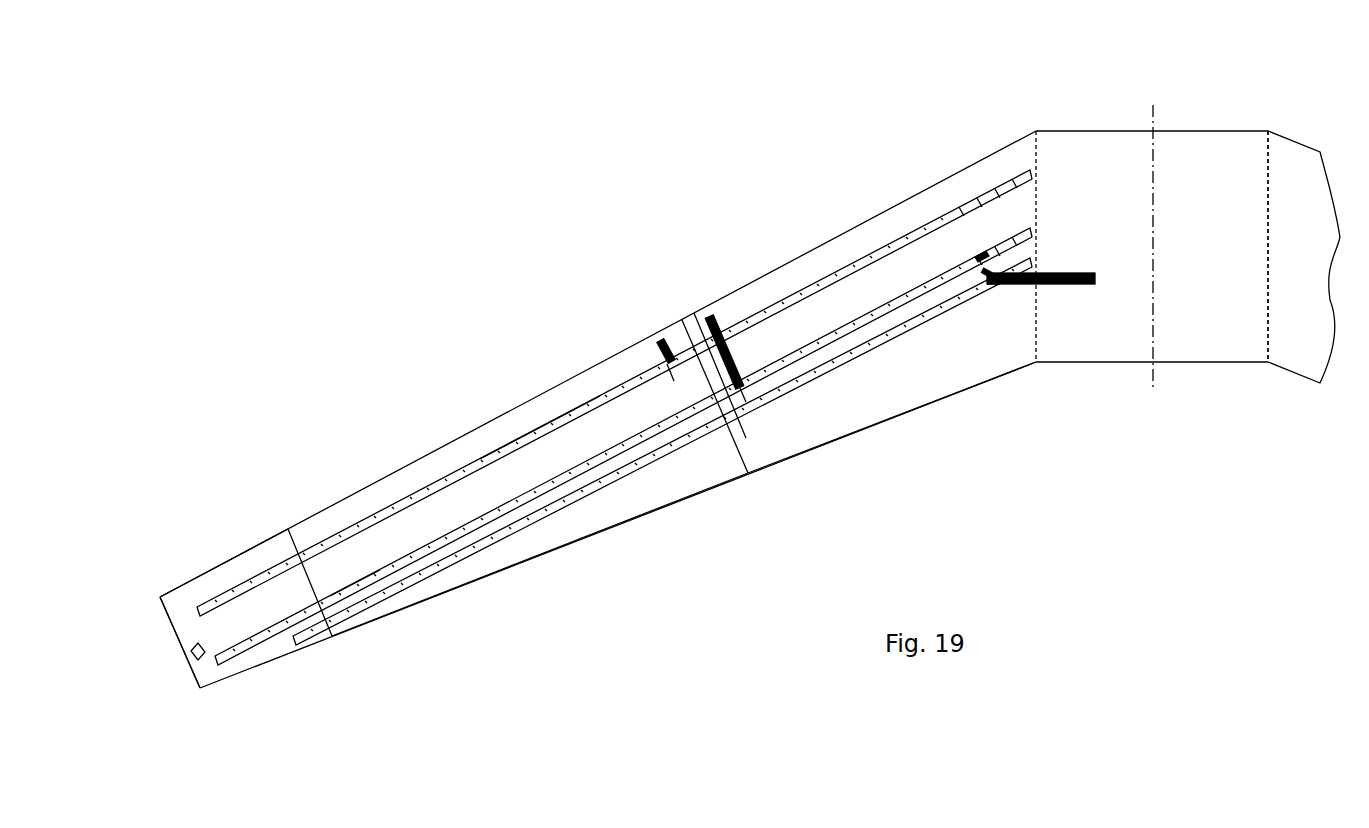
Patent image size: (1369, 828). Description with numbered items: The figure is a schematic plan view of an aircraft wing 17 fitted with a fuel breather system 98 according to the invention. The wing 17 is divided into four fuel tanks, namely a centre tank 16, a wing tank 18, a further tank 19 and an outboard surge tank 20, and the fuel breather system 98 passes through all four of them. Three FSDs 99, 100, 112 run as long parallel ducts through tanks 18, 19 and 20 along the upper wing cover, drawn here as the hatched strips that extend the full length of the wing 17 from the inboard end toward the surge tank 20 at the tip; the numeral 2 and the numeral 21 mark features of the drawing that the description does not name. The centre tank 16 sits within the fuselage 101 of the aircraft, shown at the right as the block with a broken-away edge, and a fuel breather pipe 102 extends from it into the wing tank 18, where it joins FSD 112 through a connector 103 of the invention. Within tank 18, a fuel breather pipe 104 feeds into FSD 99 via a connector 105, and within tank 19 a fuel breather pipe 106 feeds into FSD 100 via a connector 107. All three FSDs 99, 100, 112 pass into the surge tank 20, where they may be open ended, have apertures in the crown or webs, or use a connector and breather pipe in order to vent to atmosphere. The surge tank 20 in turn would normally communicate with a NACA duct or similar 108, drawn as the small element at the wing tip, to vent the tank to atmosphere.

The conductor track 2 is at (448, 478).
The centre tank 16 is at (1109, 148).
The wing 17 is at (600, 352).
The wing tank 18 is at (870, 400).
The fuel tank 19 is at (585, 527).
The surge tank 20 is at (232, 573).
The end face 21 is at (187, 590).
The fuel breather system 98 is at (532, 418).
The FSD 99 is at (353, 592).
The FSD 100 is at (395, 513).
The fuselage 101 is at (1267, 332).
The fuel breather pipe 102 is at (1078, 286).
The connector 103 is at (993, 286).
The fuel breather pipe 104 is at (716, 312).
The connector 105 is at (750, 400).
The fuel breather pipe 106 is at (655, 338).
The connector 107 is at (668, 365).
The NACA duct 108 is at (190, 653).
The FSD 112 is at (490, 542).